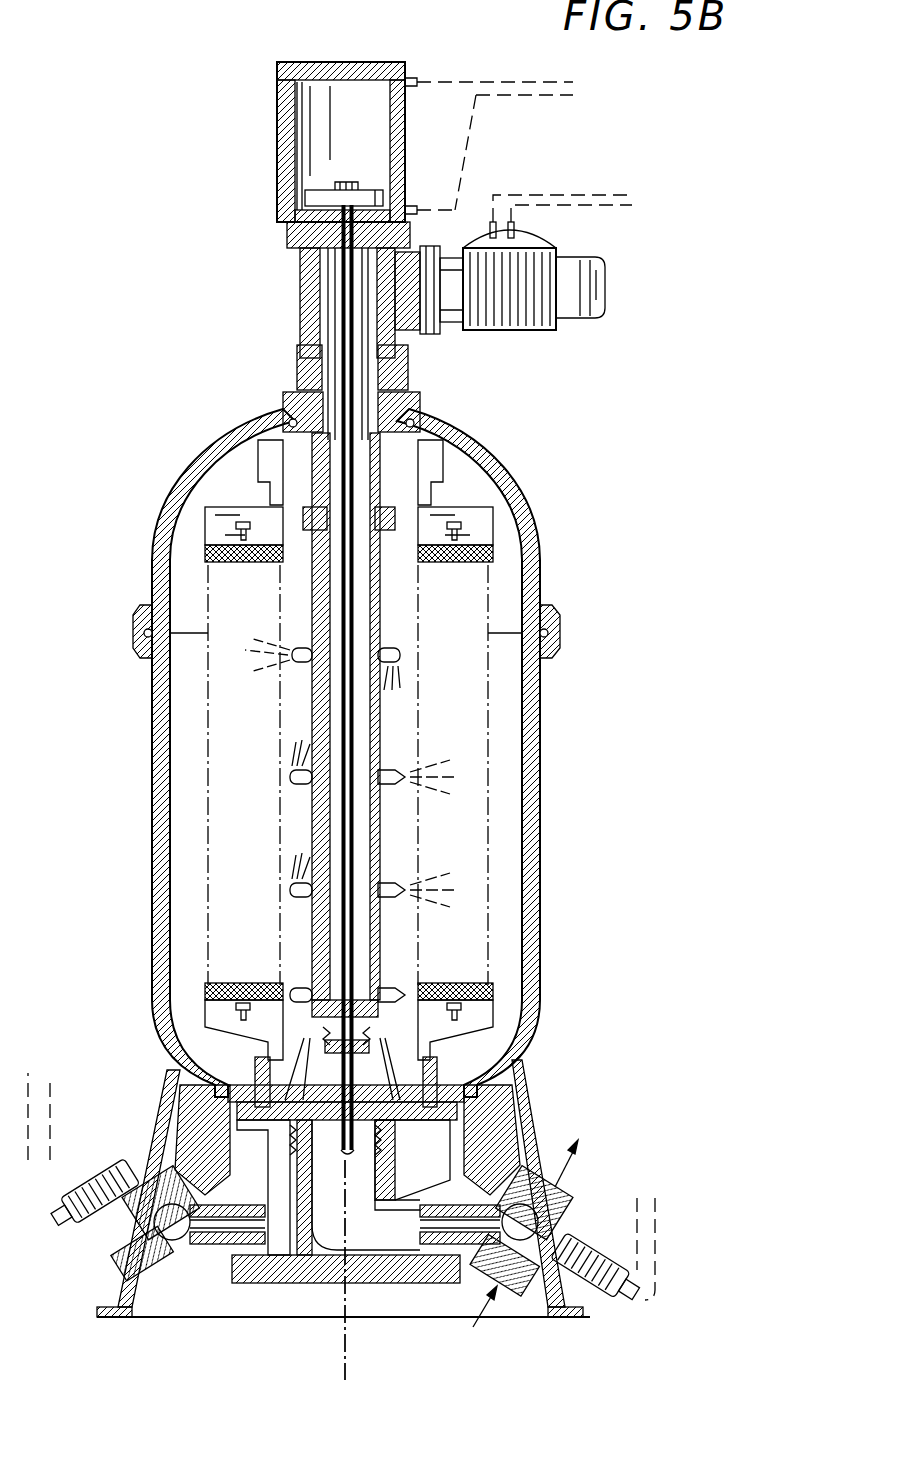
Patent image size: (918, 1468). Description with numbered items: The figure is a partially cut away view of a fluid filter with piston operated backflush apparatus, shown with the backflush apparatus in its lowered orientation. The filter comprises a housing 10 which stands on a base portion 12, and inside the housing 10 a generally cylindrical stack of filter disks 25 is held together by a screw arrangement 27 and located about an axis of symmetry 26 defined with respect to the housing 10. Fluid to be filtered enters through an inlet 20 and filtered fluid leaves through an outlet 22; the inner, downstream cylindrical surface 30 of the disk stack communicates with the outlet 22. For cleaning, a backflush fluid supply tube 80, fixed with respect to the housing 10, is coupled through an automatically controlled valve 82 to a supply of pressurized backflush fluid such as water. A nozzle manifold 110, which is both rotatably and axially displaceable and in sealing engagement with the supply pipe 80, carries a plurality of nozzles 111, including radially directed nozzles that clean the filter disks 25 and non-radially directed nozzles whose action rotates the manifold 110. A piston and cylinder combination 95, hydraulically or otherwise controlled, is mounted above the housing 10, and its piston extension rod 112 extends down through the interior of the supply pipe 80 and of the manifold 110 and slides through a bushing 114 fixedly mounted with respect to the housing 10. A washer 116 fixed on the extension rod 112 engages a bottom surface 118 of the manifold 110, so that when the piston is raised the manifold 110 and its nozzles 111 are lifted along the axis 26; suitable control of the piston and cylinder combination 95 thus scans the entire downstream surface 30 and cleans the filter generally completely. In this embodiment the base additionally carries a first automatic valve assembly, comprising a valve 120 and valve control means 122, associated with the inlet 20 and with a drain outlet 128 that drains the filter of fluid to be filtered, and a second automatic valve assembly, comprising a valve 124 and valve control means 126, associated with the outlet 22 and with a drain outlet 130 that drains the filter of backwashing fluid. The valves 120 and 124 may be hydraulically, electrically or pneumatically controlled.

The housing 10 is at (152, 746).
The base portion 12 is at (535, 1118).
The inlet 20 is at (228, 1165).
The outlet 22 is at (570, 1180).
The filter disks 25 is at (300, 998).
The axis of symmetry 26 is at (352, 1330).
The screw arrangement 27 is at (450, 528).
The downstream cylindrical surface 30 is at (290, 845).
The backflush fluid supply tube 80 is at (395, 445).
The automatically controlled valve 82 is at (547, 250).
The piston and cylinder combination 95 is at (365, 149).
The nozzle manifold 110 is at (385, 745).
The nozzles 111 is at (292, 652).
The piston extension rod 112 is at (425, 495).
The bushing 114 is at (388, 1125).
The washer 116 is at (420, 1040).
The bottom surface 118 is at (290, 1032).
The valve 120 is at (180, 1250).
The valve control means 122 is at (112, 1162).
The valve 124 is at (535, 1225).
The valve control means 126 is at (605, 1290).
The drain outlet 128 is at (120, 1255).
The drain outlet 130 is at (500, 1292).